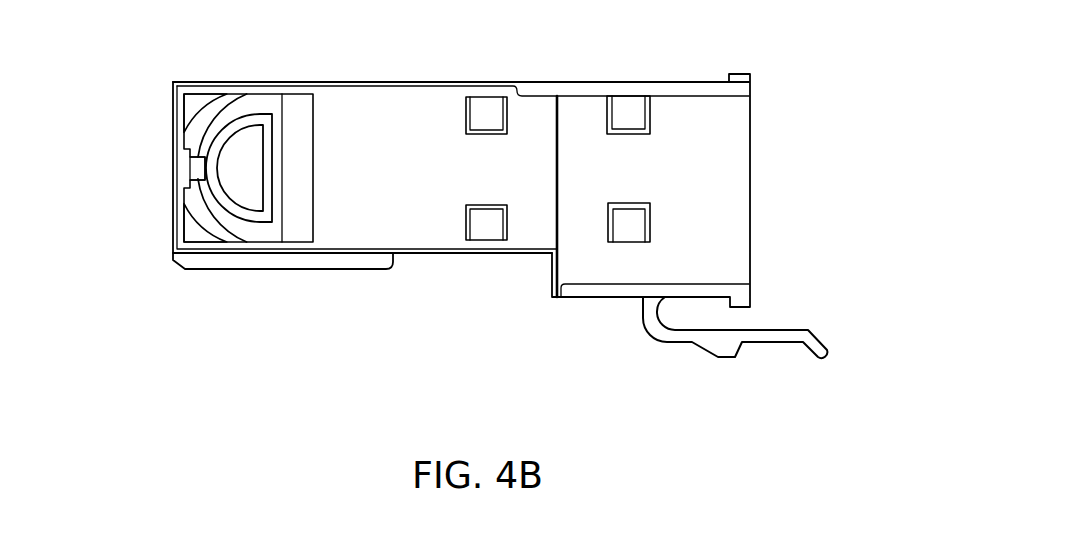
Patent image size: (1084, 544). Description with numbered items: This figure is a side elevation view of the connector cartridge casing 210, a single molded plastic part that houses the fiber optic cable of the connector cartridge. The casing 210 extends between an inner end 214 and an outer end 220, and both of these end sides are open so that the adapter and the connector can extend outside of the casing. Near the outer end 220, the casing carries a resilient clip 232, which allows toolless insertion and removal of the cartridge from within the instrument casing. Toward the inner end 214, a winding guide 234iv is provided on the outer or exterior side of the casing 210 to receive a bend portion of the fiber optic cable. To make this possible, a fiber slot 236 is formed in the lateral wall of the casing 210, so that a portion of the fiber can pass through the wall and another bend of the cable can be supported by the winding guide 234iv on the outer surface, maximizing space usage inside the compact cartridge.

The cartridge casing 210 is at (848, 136).
The inner end 214 is at (142, 163).
The outer end 220 is at (796, 245).
The resilient clip 232 is at (773, 332).
The winding guide 234iv is at (200, 172).
The fiber slot 236 is at (300, 152).